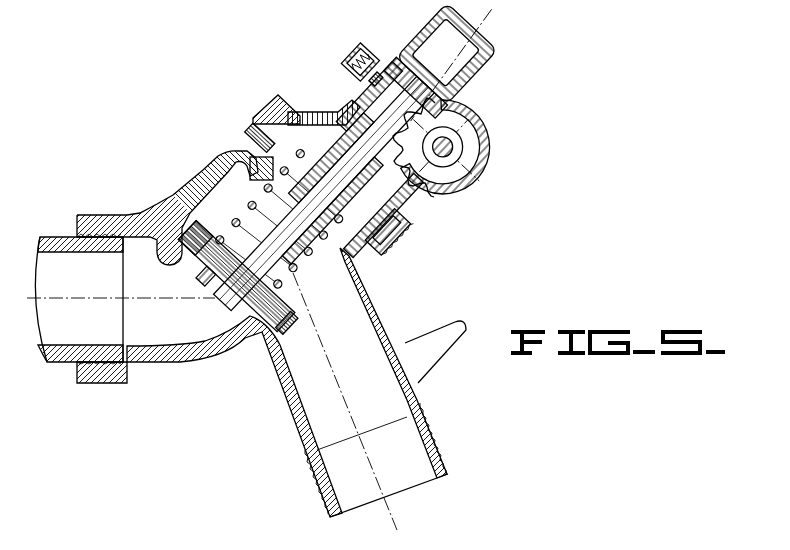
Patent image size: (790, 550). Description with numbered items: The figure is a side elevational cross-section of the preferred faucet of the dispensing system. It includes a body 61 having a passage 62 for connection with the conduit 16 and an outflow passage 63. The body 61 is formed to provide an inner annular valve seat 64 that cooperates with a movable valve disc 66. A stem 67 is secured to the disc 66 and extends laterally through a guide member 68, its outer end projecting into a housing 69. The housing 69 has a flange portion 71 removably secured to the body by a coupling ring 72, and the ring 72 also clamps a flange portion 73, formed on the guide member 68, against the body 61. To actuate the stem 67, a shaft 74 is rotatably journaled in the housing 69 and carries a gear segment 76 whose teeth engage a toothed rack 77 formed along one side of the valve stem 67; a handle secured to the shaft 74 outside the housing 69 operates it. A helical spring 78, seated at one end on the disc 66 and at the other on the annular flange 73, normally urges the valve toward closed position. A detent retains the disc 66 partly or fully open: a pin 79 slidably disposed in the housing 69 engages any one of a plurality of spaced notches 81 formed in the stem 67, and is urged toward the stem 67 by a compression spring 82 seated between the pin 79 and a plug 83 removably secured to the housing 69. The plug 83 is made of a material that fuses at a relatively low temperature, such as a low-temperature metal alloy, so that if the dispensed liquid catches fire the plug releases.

The conduit 16 is at (65, 327).
The body 61 is at (212, 170).
The passage 62 is at (183, 330).
The outflow passage 63 is at (380, 405).
The inner annular valve seat 64 is at (260, 340).
The valve disc 66 is at (280, 323).
The stem 67 is at (462, 68).
The guide member 68 is at (257, 173).
The housing 69 is at (450, 95).
The flange portion 71 is at (273, 117).
The coupling ring 72 is at (403, 247).
The flange portion 73 is at (398, 224).
The shaft 74 is at (447, 147).
The gear segment 76 is at (470, 158).
The toothed rack 77 is at (353, 120).
The helical spring 78 is at (250, 143).
The pin 79 is at (385, 87).
The notches 81 is at (345, 125).
The compression spring 82 is at (363, 62).
The plug 83 is at (343, 63).